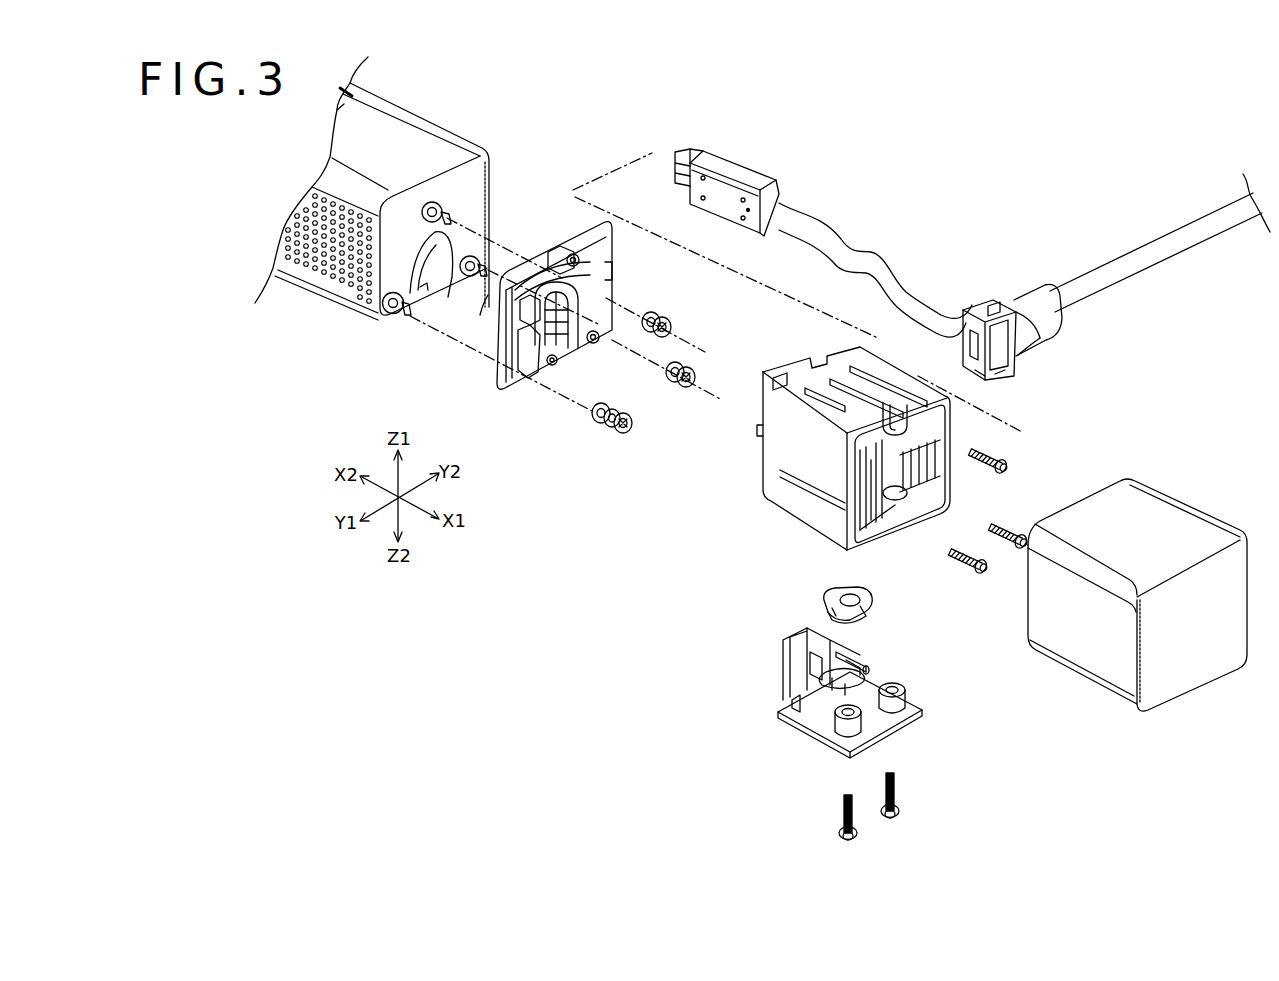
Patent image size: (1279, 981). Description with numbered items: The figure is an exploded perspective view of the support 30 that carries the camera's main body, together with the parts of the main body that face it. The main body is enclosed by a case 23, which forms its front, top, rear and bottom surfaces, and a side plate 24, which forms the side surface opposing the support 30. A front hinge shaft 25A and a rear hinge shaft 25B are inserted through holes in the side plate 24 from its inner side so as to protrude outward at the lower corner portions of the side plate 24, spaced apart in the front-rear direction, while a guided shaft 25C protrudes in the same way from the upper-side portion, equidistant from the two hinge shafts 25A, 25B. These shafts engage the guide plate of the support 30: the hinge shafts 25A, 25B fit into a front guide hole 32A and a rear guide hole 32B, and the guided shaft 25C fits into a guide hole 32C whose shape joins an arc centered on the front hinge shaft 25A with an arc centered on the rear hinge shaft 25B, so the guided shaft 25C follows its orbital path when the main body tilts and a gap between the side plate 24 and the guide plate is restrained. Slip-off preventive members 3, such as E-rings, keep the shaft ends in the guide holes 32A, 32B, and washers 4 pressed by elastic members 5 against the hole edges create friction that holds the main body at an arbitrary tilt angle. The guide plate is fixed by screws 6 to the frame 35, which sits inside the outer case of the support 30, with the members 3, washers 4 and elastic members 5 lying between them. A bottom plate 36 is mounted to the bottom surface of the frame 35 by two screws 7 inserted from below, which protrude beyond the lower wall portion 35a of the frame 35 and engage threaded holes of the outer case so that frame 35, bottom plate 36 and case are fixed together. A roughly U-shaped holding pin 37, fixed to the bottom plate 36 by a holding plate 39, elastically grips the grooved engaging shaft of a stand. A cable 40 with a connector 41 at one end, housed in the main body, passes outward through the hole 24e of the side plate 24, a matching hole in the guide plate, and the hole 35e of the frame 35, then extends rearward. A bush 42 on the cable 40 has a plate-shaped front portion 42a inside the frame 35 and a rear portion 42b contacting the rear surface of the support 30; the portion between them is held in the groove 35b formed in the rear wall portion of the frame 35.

The slip-off preventive member 3 is at (623, 434).
The washer 4 is at (598, 425).
The elastic member 5 is at (612, 430).
The screw 6 is at (990, 460).
The screw 7 is at (856, 815).
The case 23 is at (417, 137).
The side plate 24 is at (401, 227).
The hole 24e is at (432, 292).
The front hinge shaft 25A is at (393, 318).
The rear hinge shaft 25B is at (478, 268).
The guided shaft 25C is at (430, 205).
The support 30 is at (545, 587).
The front guide hole 32A is at (554, 306).
The rear guide hole 32B is at (667, 336).
The guide hole 32C is at (588, 247).
The frame 35 is at (875, 465).
The lower wall portion 35a is at (902, 516).
The groove 35b is at (930, 452).
The hole 35e is at (873, 472).
The bottom plate 36 is at (837, 695).
The holding pin 37 is at (862, 667).
The holding plate 39 is at (822, 600).
The cable 40 is at (1118, 246).
The connector 41 is at (726, 170).
The bush 42 is at (1006, 290).
The front portion 42a is at (975, 300).
The rear portion 42b is at (1034, 299).